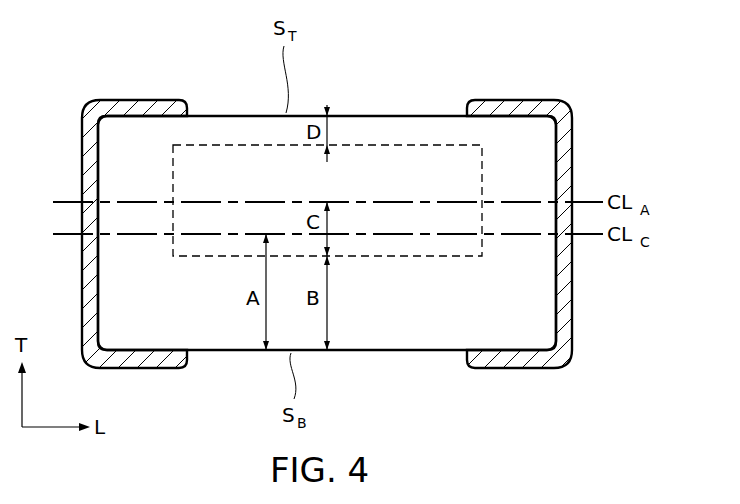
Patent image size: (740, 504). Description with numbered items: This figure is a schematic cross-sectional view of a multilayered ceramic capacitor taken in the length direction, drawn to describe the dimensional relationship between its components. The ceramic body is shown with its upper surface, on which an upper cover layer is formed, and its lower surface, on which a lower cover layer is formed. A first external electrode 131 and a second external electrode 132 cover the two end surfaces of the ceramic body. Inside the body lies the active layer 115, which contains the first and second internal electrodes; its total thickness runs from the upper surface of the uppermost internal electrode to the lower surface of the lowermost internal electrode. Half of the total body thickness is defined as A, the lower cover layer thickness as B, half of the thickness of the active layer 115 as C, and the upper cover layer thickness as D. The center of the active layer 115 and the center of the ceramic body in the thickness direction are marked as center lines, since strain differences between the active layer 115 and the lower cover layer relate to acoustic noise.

The first external electrode 131 is at (137, 106).
The second external electrode 132 is at (521, 106).
The active layer 115 is at (494, 157).